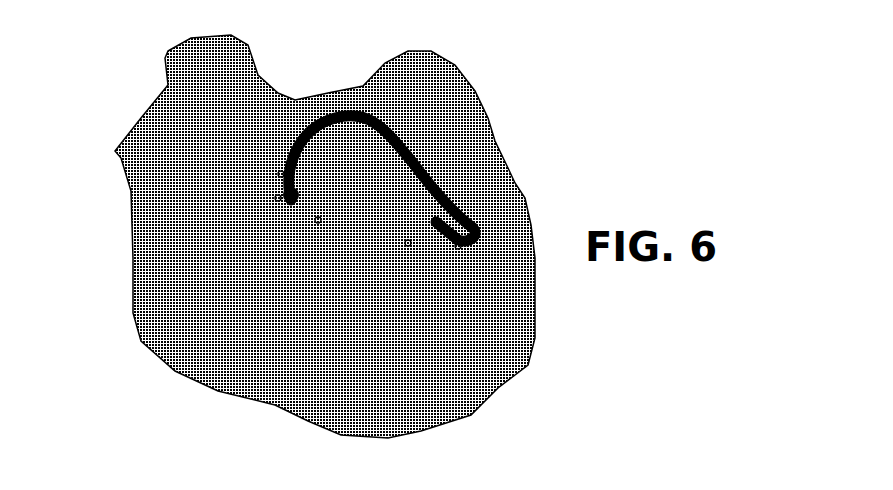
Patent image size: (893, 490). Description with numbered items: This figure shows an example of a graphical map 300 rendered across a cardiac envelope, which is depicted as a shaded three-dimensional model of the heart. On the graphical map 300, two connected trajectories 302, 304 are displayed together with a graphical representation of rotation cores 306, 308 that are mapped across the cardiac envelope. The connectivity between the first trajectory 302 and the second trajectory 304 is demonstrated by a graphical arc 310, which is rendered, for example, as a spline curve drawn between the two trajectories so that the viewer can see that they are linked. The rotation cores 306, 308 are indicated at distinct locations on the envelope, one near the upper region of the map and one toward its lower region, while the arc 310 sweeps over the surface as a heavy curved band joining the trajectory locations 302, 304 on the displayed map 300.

The graphical map 300 is at (493, 50).
The graphical arc 310 is at (410, 165).
The rotation core 306 is at (273, 160).
The trajectory 302 is at (270, 190).
The rotation core 308 is at (400, 235).
The trajectory 304 is at (450, 238).